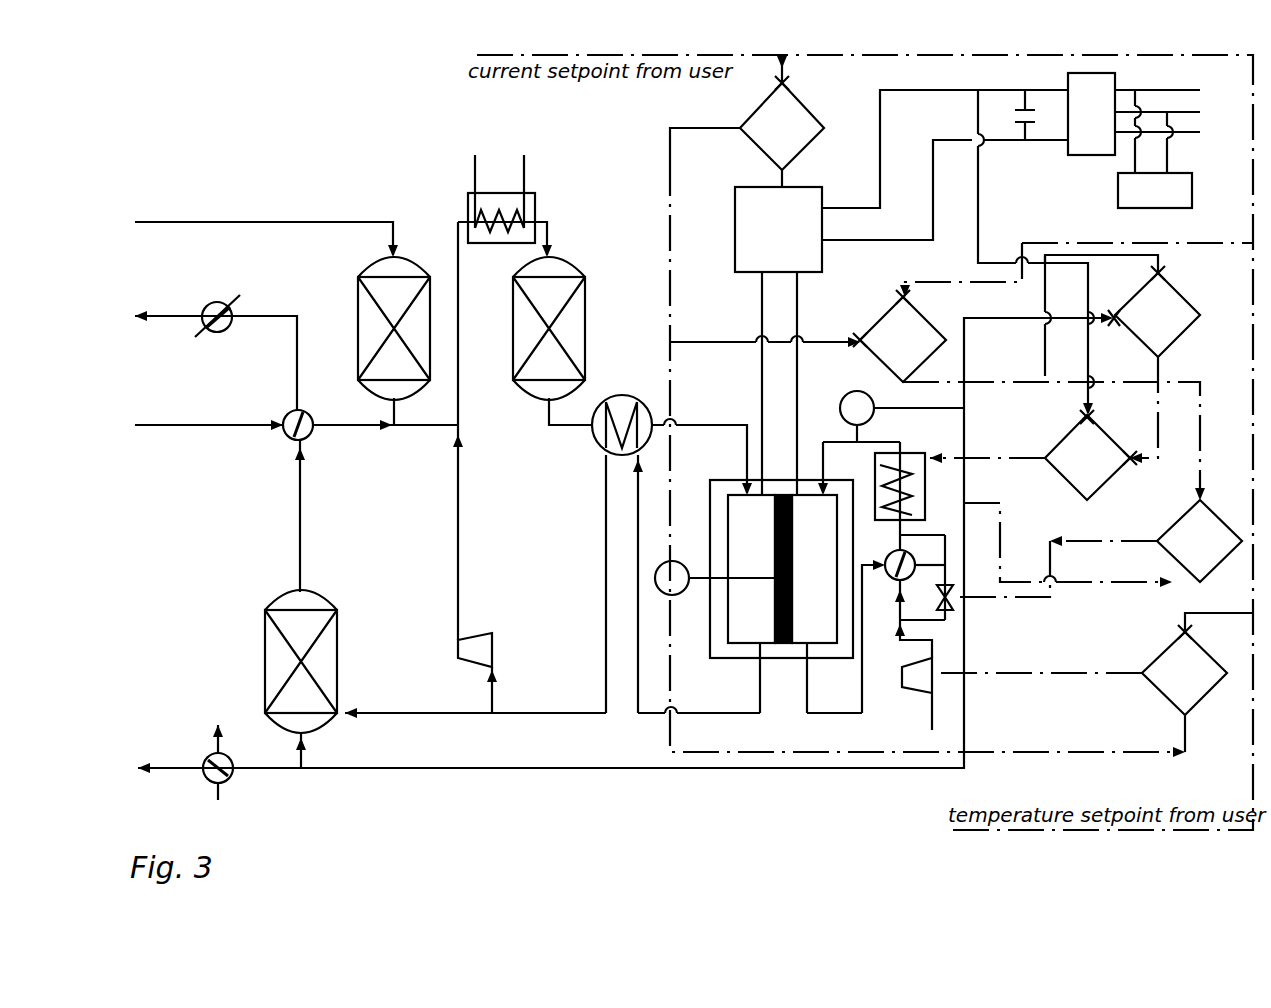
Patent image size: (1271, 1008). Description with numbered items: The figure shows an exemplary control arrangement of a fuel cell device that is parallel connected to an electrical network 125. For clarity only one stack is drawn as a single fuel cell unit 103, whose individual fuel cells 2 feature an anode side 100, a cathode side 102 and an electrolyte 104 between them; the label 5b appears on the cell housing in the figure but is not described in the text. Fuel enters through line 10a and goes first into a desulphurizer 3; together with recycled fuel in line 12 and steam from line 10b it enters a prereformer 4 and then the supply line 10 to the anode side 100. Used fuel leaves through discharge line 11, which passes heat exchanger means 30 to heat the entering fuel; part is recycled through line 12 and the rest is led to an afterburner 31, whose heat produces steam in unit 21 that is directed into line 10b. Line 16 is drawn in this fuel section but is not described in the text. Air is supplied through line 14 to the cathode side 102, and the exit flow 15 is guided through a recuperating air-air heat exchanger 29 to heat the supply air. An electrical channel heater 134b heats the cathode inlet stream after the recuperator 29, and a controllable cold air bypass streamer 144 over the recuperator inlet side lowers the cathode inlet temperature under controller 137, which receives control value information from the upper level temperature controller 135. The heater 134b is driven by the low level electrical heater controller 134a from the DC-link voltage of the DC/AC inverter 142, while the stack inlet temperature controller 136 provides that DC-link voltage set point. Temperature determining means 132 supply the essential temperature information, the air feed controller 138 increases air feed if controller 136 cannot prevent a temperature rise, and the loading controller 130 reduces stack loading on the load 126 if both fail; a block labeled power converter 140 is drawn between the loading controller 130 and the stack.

The fuel inlet line 10a is at (340, 222).
The desulphurizer 3 is at (358, 300).
The steam line 10b is at (347, 423).
The steam producing unit 21 is at (290, 418).
The outlet line / valve 16 is at (195, 316).
The air supply line 14 is at (535, 210).
The fuel recycle line 12 is at (458, 518).
The prereformer 4 is at (513, 300).
The heat exchanger means 30 is at (630, 396).
The supply line 10 is at (745, 425).
The discharge line 11 is at (560, 712).
The afterburner 31 is at (265, 647).
The cathode exit flow 15 is at (192, 767).
The fuel cell 2 is at (710, 518).
The cell housing 5b is at (717, 480).
The anode side 100 is at (733, 495).
The electrolyte 104 is at (781, 495).
The cathode side 102 is at (807, 495).
The fuel cell unit 103 is at (830, 660).
The temperature determining means 132 is at (655, 578).
The recuperating air-air heat exchanger 29 is at (895, 578).
The electrical channel heater 134b is at (925, 478).
The low level electrical heater controller 134a is at (1062, 440).
The cold air bypass streamer 144 is at (953, 600).
The loading controller 130 is at (805, 147).
The power converter 140 is at (735, 205).
The upper level temperature controller 135 is at (882, 318).
The stack inlet temperature controller 136 is at (1178, 294).
The bypass controller 137 is at (1170, 526).
The air feed controller 138 is at (1162, 650).
The DC/AC inverter 142 is at (1068, 152).
The electrical network 125 is at (1180, 109).
The load 126 is at (1118, 192).